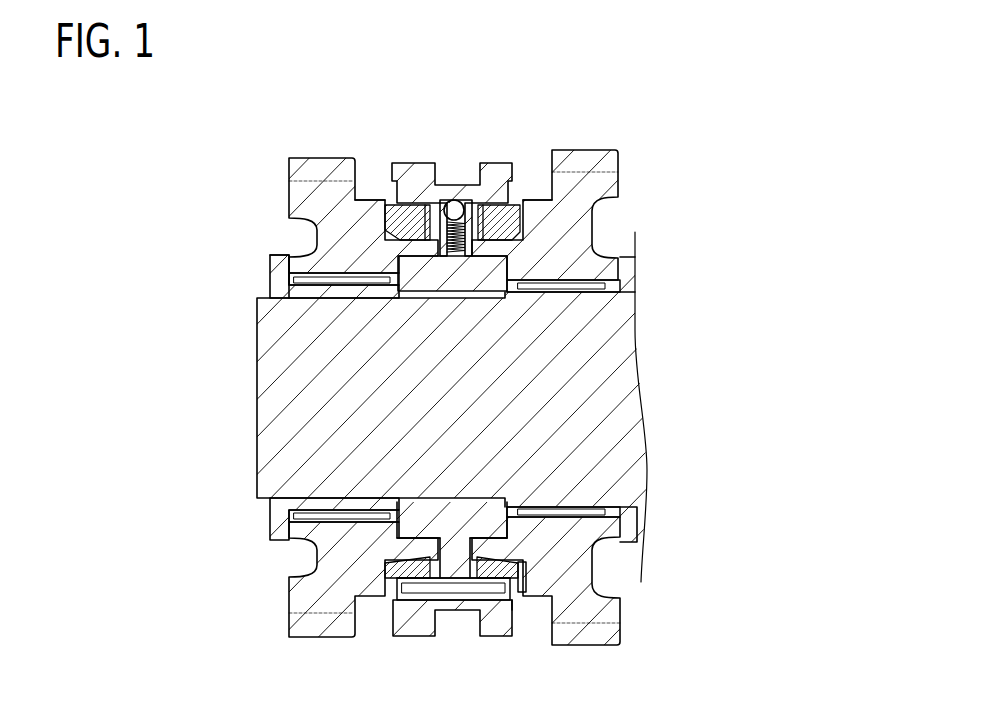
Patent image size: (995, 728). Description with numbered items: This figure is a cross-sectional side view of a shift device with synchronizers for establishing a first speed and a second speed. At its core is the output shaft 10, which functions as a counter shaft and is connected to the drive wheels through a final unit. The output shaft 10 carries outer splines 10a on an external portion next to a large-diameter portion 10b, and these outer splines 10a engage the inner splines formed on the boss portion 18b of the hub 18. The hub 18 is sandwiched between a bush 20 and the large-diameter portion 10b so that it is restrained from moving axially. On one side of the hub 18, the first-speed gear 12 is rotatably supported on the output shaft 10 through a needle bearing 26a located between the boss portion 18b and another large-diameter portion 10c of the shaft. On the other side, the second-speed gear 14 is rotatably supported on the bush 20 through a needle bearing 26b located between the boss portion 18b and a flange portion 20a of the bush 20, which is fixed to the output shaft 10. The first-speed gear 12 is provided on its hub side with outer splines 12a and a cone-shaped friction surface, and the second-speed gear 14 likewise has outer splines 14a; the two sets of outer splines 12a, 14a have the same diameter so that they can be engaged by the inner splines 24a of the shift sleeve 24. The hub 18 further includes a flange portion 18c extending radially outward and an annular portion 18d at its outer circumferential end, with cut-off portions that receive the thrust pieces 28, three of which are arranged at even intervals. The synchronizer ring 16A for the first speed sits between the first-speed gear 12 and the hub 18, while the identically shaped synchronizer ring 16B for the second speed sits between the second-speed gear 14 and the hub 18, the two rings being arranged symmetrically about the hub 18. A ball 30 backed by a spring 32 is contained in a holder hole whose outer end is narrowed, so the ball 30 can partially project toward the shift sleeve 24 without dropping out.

The output shaft 10 is at (557, 399).
The outer splines 10a is at (398, 538).
The large-diameter portion 10b is at (507, 292).
The large-diameter portion 10c is at (627, 263).
The first-speed gear 12 is at (600, 185).
The outer splines 12a is at (556, 198).
The second-speed gear 14 is at (320, 172).
The outer splines 14a is at (363, 201).
The synchronizer ring 16A is at (392, 206).
The synchronizer ring 16B is at (518, 206).
The hub 18 is at (440, 546).
The boss portion 18b is at (428, 558).
The flange portion 18c is at (620, 513).
The annular portion 18d is at (520, 612).
The bush 20 is at (320, 290).
The flange portion 20a is at (277, 272).
The shift sleeve 24 is at (507, 632).
The inner splines 24a is at (440, 552).
The needle bearing 26a is at (598, 272).
The needle bearing 26b is at (313, 260).
The thrust piece 28 is at (443, 198).
The ball 30 is at (462, 205).
The spring 32 is at (453, 215).